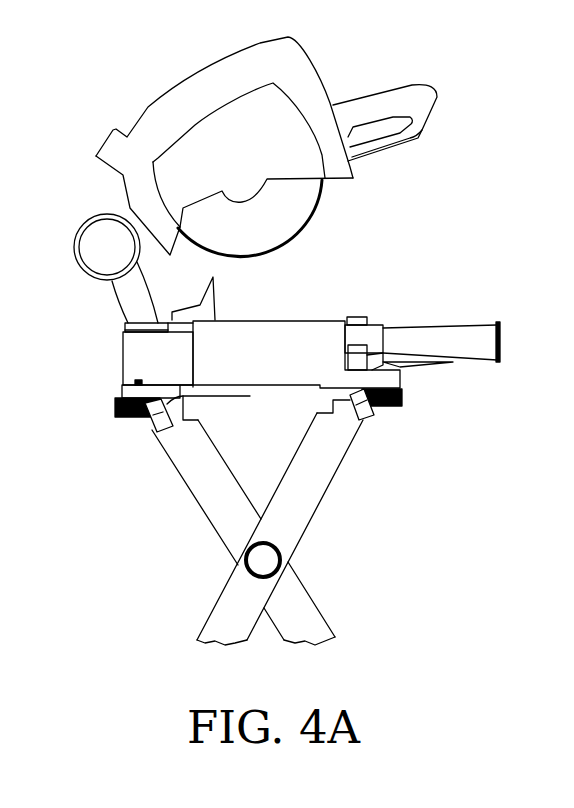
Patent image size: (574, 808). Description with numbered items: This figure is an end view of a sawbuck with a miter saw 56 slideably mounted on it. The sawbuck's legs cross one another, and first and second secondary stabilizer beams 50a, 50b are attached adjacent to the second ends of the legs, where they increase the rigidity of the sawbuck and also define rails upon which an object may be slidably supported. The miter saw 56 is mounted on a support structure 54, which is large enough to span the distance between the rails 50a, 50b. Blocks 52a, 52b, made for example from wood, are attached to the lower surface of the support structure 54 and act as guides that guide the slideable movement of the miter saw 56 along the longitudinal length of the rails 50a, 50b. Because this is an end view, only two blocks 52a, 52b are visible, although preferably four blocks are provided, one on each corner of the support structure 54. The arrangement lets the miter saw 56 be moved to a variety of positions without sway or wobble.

The miter saw 56 is at (263, 70).
The support structure 54 is at (293, 335).
The block 52a is at (393, 406).
The block 52b is at (141, 410).
The secondary stabilizer beam 50a is at (357, 408).
The secondary stabilizer beam 50b is at (250, 396).